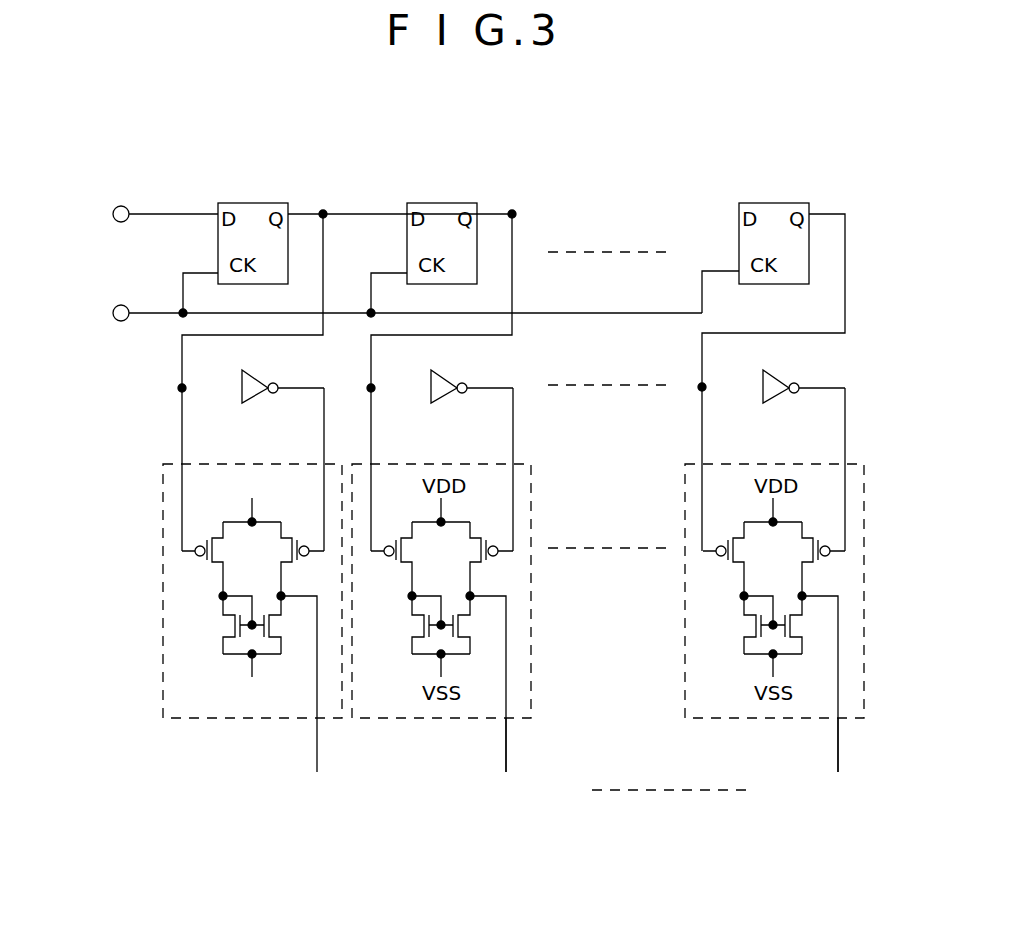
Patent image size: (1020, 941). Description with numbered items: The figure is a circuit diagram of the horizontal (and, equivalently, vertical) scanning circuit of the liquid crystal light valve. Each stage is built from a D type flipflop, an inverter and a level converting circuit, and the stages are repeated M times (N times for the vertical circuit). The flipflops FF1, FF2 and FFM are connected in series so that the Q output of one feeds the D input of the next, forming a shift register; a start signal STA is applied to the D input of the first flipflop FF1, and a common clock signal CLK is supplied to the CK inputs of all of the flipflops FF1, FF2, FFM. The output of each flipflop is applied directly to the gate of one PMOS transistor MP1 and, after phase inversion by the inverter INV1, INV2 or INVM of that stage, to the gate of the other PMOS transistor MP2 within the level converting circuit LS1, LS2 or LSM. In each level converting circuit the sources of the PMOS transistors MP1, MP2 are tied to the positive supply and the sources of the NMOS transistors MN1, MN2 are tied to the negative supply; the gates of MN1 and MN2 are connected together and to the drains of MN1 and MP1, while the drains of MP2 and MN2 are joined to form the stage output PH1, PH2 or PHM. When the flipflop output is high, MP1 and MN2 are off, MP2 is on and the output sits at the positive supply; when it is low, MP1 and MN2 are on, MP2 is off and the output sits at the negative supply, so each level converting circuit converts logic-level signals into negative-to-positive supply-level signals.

The D type flipflop FF1 is at (252, 203).
The D type flipflop FF2 is at (442, 218).
The D type flipflop FFM is at (797, 218).
The inverter INV1 is at (260, 376).
The inverter INV2 is at (473, 374).
The inverter INVM is at (844, 374).
The level converting circuit LS1 is at (263, 464).
The level converting circuit LS2 is at (441, 595).
The level converting circuit LSM is at (801, 595).
The PMOS transistor MP1 is at (212, 564).
The PMOS transistor MP2 is at (292, 561).
The NMOS transistor MN1 is at (223, 618).
The NMOS transistor MN2 is at (278, 628).
The start signal input STA is at (133, 230).
The clock signal input CLK is at (375, 329).
The scanning circuit output PH1 is at (317, 719).
The scanning circuit output PH2 is at (513, 780).
The scanning circuit output PHM is at (842, 780).